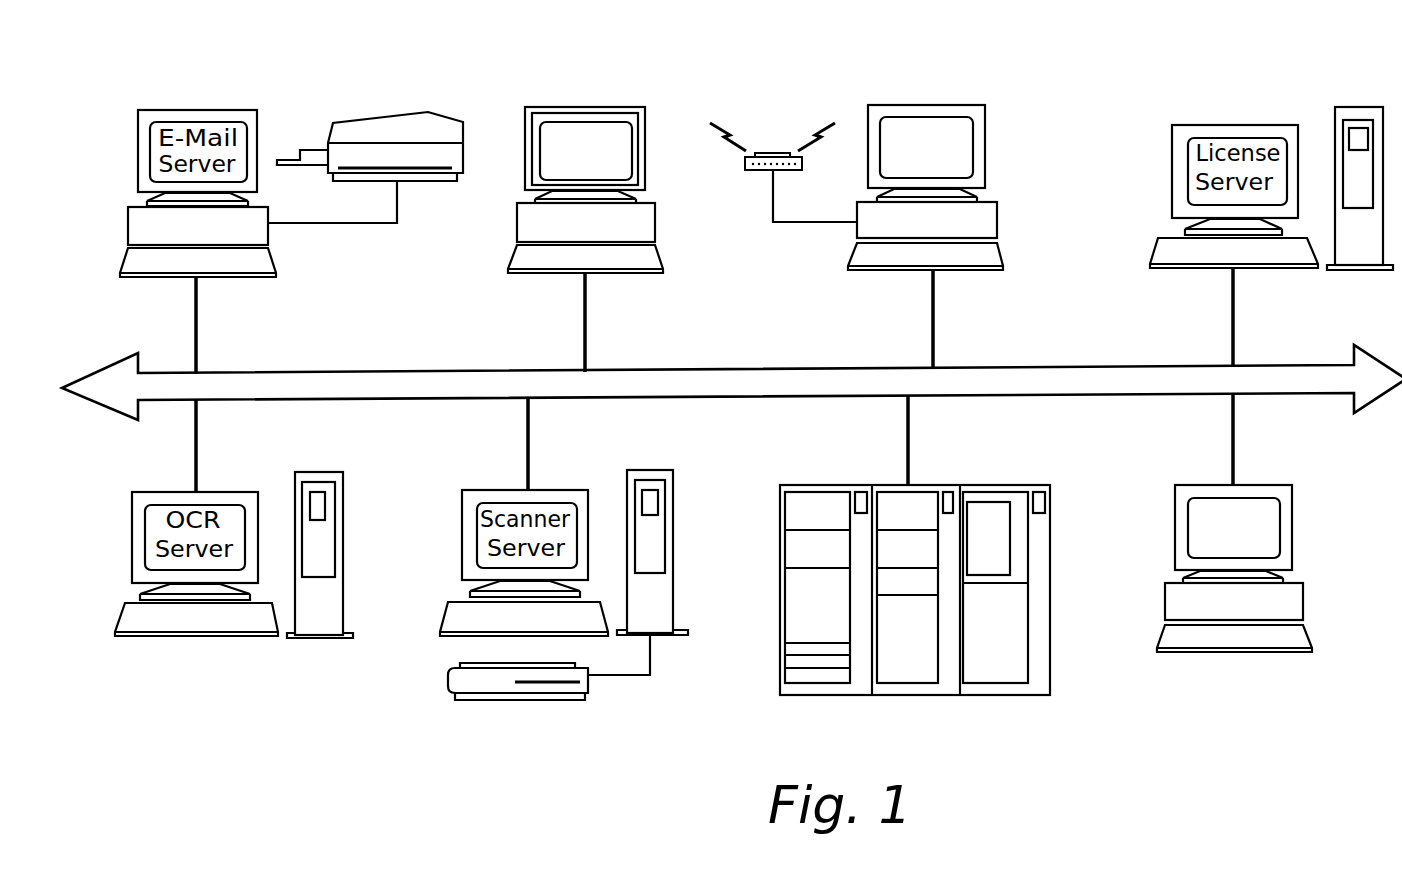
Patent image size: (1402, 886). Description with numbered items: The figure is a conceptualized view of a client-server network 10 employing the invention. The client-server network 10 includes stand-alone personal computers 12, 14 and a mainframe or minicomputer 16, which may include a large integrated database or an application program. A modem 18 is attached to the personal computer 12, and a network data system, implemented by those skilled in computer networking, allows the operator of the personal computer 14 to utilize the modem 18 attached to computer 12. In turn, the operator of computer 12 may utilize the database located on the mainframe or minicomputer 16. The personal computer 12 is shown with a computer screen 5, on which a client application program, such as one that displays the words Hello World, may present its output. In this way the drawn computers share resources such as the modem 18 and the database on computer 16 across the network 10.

The client-server network 10 is at (822, 53).
The computer screen 5 is at (986, 108).
The stand-alone personal computer 12 is at (1032, 169).
The modem 18 is at (775, 152).
The mainframe or minicomputer 16 is at (1052, 607).
The stand-alone personal computer 14 is at (1293, 558).